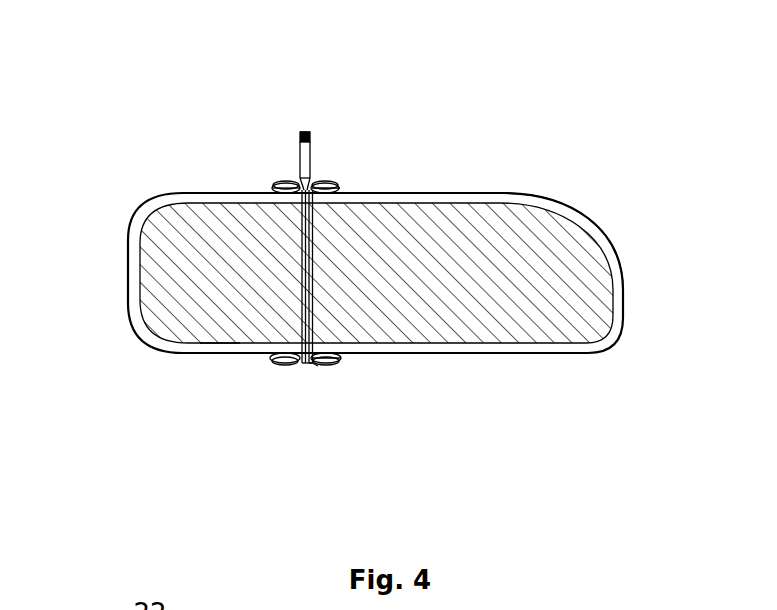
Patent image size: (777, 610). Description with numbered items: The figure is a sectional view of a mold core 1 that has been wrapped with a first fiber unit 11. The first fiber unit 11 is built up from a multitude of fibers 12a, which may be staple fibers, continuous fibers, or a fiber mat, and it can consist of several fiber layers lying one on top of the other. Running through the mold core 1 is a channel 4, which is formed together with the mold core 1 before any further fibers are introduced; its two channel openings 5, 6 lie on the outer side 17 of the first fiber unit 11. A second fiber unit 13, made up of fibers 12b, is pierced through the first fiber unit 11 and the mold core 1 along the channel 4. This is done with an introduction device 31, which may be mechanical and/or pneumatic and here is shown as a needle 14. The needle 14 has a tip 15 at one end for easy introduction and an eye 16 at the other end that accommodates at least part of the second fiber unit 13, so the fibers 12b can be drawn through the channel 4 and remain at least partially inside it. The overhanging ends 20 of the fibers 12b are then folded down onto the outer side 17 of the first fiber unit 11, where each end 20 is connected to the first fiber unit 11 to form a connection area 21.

The mold core 1 is at (168, 228).
The channel 4 is at (317, 248).
The channel opening 5 is at (272, 185).
The channel opening 6 is at (302, 363).
The first fiber unit 11 is at (132, 318).
The fibers 12a is at (223, 348).
The fibers 12b is at (305, 132).
The second fiber unit 13 is at (310, 365).
The needle 14 is at (316, 158).
The tip 15 is at (298, 181).
The eye 16 is at (308, 134).
The outer side 17 is at (530, 197).
The overhanging ends 20 is at (322, 365).
The connection area 21 is at (320, 188).
The introduction device 31 is at (291, 127).